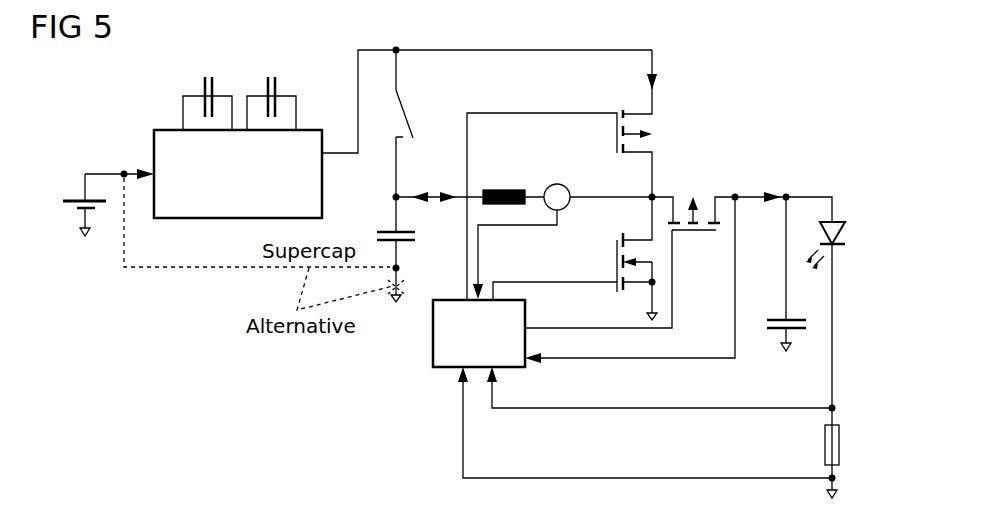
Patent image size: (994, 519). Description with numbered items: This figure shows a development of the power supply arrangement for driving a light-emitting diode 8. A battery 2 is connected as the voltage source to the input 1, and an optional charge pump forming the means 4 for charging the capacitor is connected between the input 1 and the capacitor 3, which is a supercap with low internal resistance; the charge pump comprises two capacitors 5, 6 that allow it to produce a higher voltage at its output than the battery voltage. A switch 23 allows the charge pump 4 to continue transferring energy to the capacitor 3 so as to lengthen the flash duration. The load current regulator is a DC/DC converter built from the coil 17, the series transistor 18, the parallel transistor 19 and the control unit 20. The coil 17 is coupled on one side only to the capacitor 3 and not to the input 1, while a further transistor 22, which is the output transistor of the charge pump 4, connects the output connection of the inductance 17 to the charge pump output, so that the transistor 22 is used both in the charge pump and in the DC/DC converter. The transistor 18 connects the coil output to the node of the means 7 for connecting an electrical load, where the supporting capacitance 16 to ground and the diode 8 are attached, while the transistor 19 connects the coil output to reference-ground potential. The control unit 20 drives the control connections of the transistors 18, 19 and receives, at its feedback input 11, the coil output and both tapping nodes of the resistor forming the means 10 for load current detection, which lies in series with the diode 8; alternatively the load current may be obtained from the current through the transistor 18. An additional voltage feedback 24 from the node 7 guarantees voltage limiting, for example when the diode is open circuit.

The input 1 is at (124, 174).
The battery 2 is at (63, 201).
The capacitor 3 is at (387, 230).
The means for charging the capacitor 4 is at (163, 130).
The capacitor 5 is at (203, 83).
The capacitor 6 is at (278, 83).
The means for connecting an electrical load 7 is at (786, 197).
The light-emitting diode 8 is at (838, 220).
The means for load current detection 10 is at (825, 446).
The feedback input 11 is at (496, 368).
The supporting capacitance 16 is at (783, 333).
The coil 17 is at (513, 190).
The transistor 18 is at (685, 203).
The transistor 19 is at (616, 270).
The control unit 20 is at (440, 367).
The further transistor 22 is at (622, 112).
The switch 23 is at (405, 113).
The voltage feedback 24 is at (697, 357).